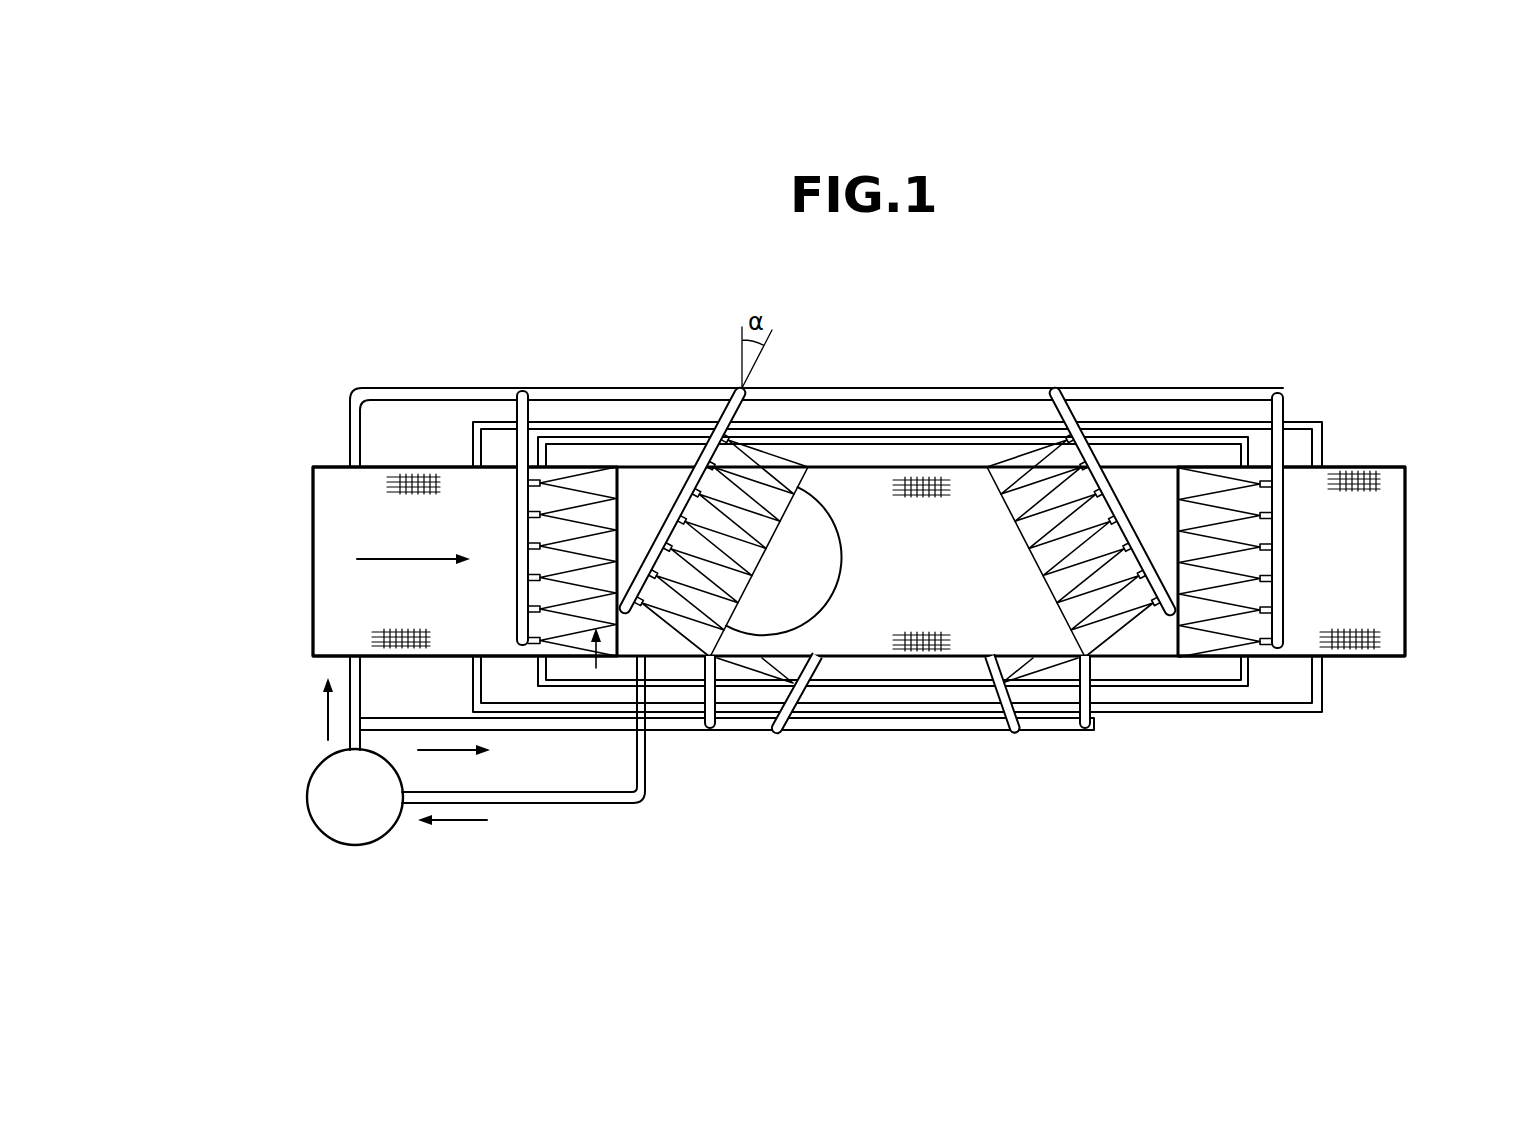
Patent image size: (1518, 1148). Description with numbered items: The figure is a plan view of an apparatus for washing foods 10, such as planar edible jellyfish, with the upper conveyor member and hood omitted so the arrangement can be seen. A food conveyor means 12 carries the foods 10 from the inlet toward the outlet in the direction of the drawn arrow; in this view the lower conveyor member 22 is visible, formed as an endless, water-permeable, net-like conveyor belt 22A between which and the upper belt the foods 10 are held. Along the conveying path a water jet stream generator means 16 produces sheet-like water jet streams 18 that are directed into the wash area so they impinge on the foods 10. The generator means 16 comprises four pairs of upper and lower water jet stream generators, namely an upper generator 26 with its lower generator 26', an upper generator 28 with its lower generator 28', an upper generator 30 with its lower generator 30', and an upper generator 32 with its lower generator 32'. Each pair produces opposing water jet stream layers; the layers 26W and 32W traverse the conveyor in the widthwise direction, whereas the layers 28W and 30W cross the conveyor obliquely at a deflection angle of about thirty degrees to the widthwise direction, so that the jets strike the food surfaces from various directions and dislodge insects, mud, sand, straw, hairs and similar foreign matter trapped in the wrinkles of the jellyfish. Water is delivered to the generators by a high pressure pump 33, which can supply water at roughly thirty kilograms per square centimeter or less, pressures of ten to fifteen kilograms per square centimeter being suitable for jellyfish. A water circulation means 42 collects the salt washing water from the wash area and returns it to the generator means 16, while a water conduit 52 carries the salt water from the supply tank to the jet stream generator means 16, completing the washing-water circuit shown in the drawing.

The foods 10 is at (823, 587).
The food conveyor means 12 is at (1390, 538).
The water jet stream generator means 16 is at (508, 505).
The water jet stream 18 is at (596, 668).
The lower conveyor member 22 is at (388, 561).
The lower endless type conveyor belt 22A is at (325, 523).
The upper water jet stream generator 26 is at (395, 518).
The water jet stream layer 26W is at (509, 497).
The lower water jet stream generator 26' is at (725, 736).
The upper water jet stream generator 28 is at (683, 470).
The water jet stream layer 28W is at (790, 470).
The lower water jet stream generator 28' is at (797, 735).
The upper water jet stream generator 30 is at (1113, 464).
The water jet stream layer 30W is at (1009, 468).
The lower water jet stream generator 30' is at (1011, 735).
The upper water jet stream generator 32 is at (1362, 520).
The water jet stream layer 32W is at (1212, 483).
The lower water jet stream generator 32' is at (1088, 736).
The high pressure pump 33 is at (325, 796).
The water circulation means 42 is at (294, 723).
The water conduit 52 is at (350, 420).